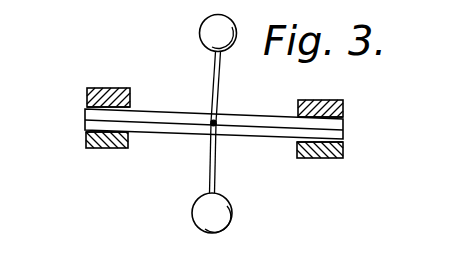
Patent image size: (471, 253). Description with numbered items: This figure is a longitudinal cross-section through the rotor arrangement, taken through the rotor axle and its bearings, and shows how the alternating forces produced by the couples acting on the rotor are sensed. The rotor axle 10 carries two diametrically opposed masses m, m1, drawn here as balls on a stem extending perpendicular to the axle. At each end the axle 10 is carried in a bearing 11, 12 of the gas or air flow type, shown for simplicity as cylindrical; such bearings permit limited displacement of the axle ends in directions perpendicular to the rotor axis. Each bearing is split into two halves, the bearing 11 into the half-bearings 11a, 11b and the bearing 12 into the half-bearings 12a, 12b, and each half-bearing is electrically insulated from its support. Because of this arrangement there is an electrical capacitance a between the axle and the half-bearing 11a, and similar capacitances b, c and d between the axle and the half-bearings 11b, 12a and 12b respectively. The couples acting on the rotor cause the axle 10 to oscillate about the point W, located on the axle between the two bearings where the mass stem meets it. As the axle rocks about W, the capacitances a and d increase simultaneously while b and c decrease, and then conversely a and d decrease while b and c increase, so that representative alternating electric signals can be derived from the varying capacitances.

The rotor axle 10 is at (268, 122).
The bearing 11 is at (89, 122).
The half-bearing 11a is at (116, 97).
The half-bearing 11b is at (113, 148).
The electrical capacitance a is at (83, 103).
The electrical capacitance b is at (83, 131).
The bearing 12 is at (345, 144).
The half-bearing 12a is at (343, 98).
The half-bearing 12b is at (325, 158).
The electrical capacitance c is at (347, 121).
The electrical capacitance d is at (346, 142).
The mass m is at (204, 33).
The mass m1 is at (230, 216).
The point W is at (212, 121).